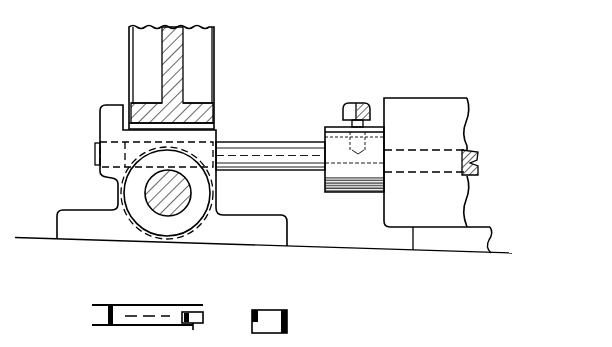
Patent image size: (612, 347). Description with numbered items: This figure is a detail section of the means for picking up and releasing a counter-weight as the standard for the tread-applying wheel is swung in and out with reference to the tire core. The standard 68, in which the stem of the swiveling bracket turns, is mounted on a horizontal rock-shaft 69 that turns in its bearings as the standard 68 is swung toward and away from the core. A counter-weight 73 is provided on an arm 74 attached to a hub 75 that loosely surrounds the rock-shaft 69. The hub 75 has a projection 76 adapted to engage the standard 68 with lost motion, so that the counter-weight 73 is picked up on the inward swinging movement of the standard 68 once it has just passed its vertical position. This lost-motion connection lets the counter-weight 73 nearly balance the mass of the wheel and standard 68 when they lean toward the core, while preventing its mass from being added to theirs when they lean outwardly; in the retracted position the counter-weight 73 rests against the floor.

The standard 68 is at (202, 48).
The rock-shaft 69 is at (157, 198).
The counter-weight 73 is at (418, 113).
The arm 74 is at (250, 155).
The hub 75 is at (129, 163).
The projection 76 is at (107, 103).